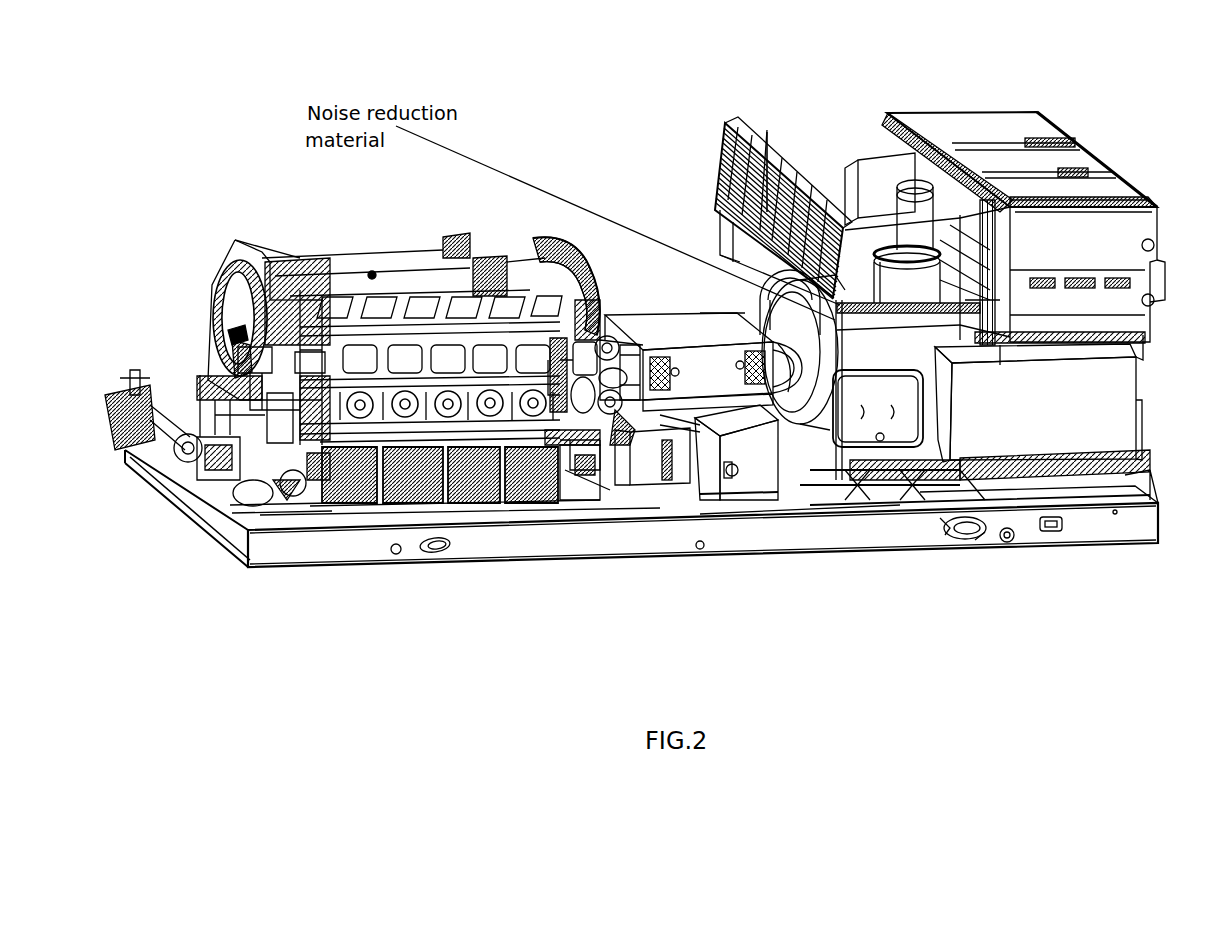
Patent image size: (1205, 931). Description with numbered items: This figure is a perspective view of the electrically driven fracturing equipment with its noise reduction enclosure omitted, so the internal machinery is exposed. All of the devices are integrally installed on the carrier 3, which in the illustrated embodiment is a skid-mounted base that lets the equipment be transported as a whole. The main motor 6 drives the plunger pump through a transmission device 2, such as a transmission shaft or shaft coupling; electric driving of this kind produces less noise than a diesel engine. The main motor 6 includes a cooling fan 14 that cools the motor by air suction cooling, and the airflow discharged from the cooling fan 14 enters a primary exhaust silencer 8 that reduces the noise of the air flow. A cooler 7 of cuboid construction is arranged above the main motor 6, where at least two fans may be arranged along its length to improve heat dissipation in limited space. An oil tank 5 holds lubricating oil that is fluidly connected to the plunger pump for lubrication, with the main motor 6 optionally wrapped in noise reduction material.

The transmission device 2 is at (697, 360).
The carrier 3 is at (988, 545).
The oil tank 5 is at (668, 440).
The main motor 6 is at (908, 337).
The cooler 7 is at (1077, 268).
The primary exhaust silencer 8 is at (770, 130).
The cooling fan 14 is at (900, 285).